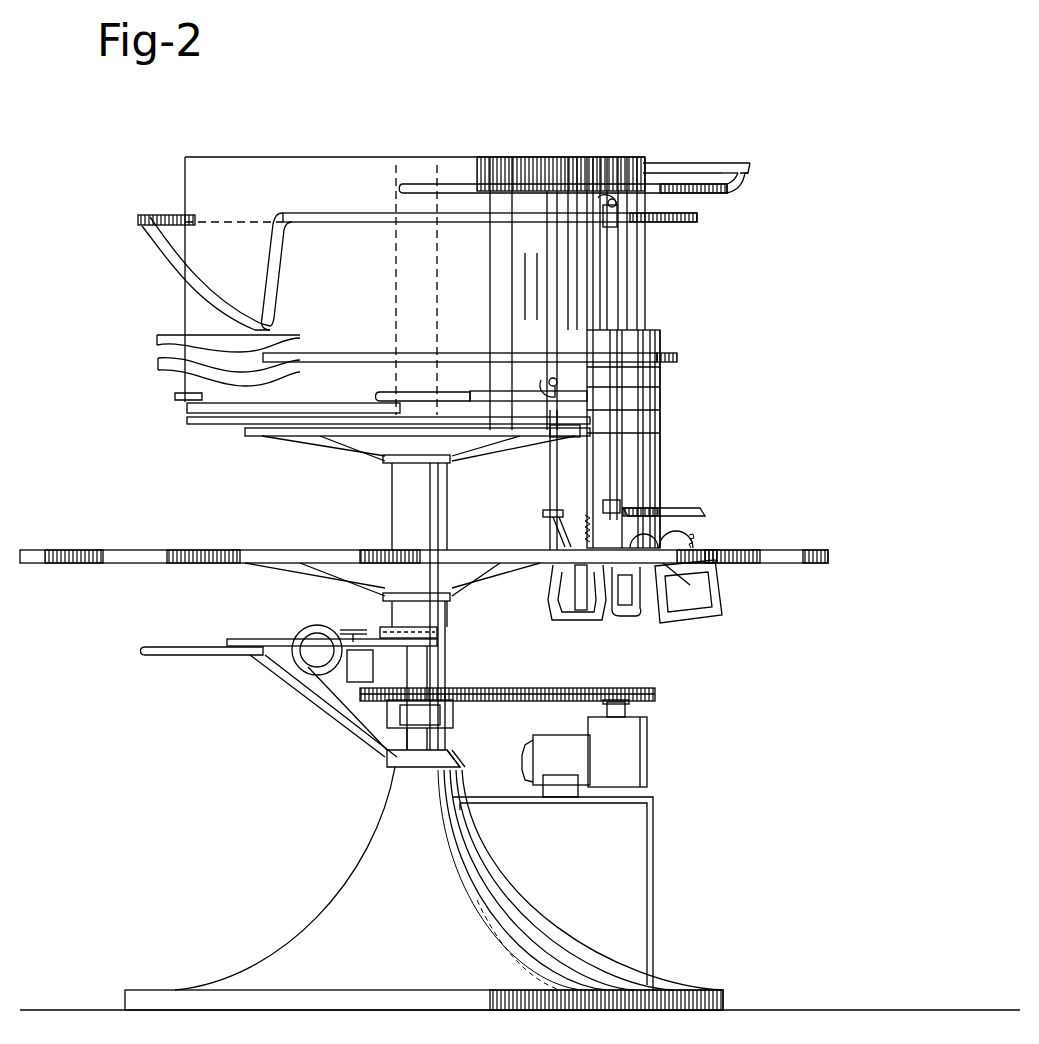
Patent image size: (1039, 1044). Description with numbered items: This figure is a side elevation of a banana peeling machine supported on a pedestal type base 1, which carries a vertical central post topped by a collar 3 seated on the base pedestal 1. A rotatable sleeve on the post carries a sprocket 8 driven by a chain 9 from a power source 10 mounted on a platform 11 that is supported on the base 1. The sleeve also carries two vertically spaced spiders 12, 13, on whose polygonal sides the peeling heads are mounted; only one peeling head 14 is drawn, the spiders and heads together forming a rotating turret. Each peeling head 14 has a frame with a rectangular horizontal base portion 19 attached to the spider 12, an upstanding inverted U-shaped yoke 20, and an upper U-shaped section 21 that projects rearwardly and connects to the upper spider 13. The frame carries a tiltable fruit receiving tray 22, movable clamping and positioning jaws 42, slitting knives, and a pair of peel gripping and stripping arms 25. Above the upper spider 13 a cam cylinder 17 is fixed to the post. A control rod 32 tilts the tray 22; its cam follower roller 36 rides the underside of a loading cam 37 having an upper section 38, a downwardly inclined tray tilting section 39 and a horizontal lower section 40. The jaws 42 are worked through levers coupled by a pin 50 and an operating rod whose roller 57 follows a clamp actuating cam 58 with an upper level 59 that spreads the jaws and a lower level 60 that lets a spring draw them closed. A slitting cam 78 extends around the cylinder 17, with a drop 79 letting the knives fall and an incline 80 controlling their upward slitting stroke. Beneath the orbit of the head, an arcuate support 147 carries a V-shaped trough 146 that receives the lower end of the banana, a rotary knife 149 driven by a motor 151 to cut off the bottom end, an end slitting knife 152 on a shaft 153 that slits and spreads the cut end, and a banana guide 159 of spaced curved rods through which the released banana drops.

The pedestal type base 1 is at (335, 903).
The collar 3 is at (458, 752).
The sprocket 8 is at (348, 697).
The chain 9 is at (545, 688).
The power source 10 is at (560, 735).
The platform 11 is at (580, 800).
The spider 12 is at (222, 565).
The spider 13 is at (262, 440).
The peeling head 14 is at (678, 458).
The cam cylinder 17 is at (185, 293).
The base portion 19 is at (720, 550).
The yoke 20 is at (658, 490).
The upper section 21 is at (577, 435).
The fruit receiving tray 22 is at (718, 513).
The peel gripping and stripping arms 25 is at (665, 627).
The control rod 32 is at (618, 455).
The cam follower roller 36 is at (600, 207).
The loading cam 37 is at (535, 186).
The upper section 38 is at (750, 164).
The tray tilting section 39 is at (740, 186).
The lower section 40 is at (478, 188).
The clamping and positioning jaws 42 is at (606, 590).
The pin 50 is at (548, 491).
The roller 57 is at (545, 385).
The clamp actuating cam 58 is at (479, 386).
The upper level 59 is at (498, 364).
The lower level 60 is at (345, 401).
The slitting cam 78 is at (700, 218).
The drop 79 is at (276, 260).
The incline 80 is at (205, 290).
The V-shaped trough 146 is at (440, 618).
The arcuate support 147 is at (440, 643).
The rotary knife 149 is at (355, 628).
The motor 151 is at (348, 677).
The end slitting knife 152 is at (325, 625).
The shaft 153 is at (318, 660).
The banana guide 159 is at (178, 657).